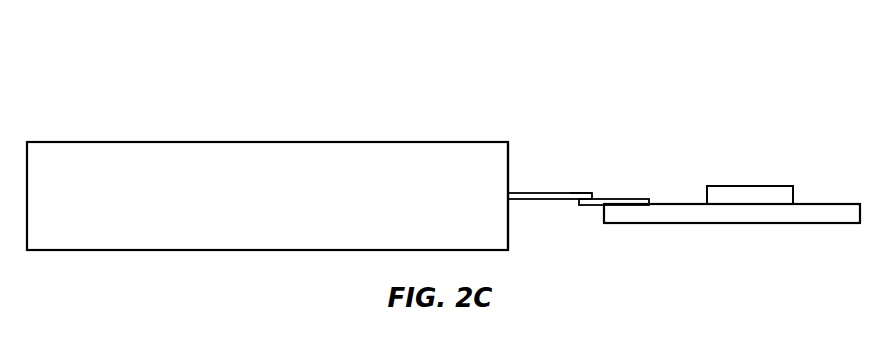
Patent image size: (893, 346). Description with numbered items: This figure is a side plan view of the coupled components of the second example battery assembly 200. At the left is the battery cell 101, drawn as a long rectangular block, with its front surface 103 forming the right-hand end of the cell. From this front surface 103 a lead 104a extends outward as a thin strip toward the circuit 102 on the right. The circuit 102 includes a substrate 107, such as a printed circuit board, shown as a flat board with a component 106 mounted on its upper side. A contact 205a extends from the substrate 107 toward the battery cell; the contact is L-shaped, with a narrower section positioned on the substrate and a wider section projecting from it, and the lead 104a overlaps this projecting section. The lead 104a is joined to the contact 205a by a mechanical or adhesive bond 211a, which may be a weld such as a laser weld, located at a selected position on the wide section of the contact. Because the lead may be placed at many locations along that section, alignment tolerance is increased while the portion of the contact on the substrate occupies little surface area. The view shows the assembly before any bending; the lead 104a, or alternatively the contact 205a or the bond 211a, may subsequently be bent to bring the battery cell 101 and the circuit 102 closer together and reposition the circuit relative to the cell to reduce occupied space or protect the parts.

The battery assembly 200 is at (773, 58).
The battery cell 101 is at (257, 142).
The front surface 103 is at (509, 233).
The lead 104a is at (534, 193).
The mechanical or adhesive bond 211a is at (585, 193).
The contact 205a is at (636, 201).
The circuit 102 is at (814, 226).
The component 106 is at (754, 186).
The substrate 107 is at (757, 223).